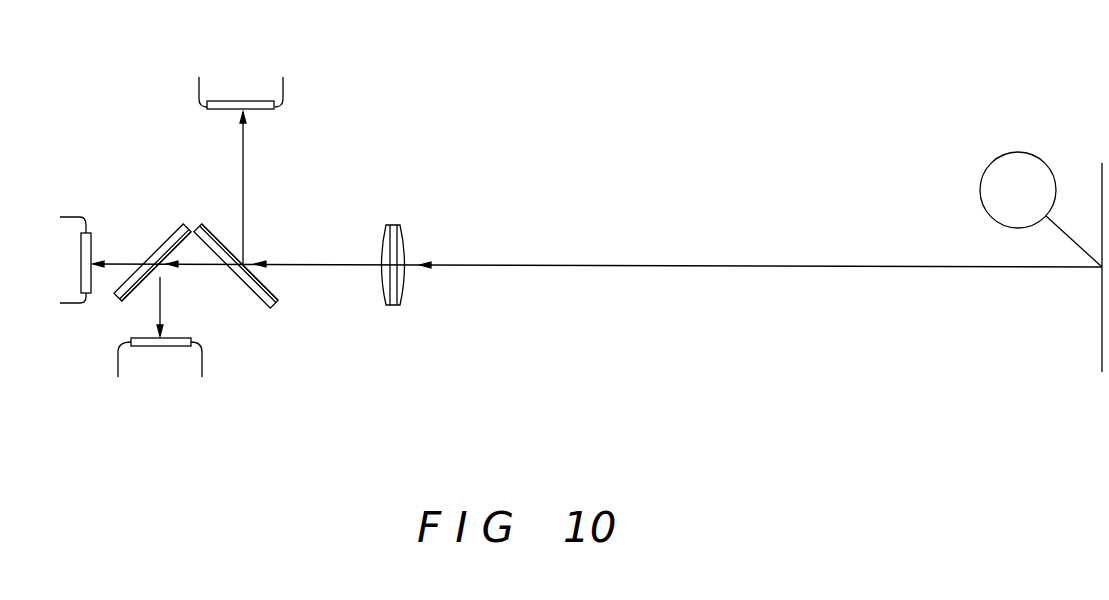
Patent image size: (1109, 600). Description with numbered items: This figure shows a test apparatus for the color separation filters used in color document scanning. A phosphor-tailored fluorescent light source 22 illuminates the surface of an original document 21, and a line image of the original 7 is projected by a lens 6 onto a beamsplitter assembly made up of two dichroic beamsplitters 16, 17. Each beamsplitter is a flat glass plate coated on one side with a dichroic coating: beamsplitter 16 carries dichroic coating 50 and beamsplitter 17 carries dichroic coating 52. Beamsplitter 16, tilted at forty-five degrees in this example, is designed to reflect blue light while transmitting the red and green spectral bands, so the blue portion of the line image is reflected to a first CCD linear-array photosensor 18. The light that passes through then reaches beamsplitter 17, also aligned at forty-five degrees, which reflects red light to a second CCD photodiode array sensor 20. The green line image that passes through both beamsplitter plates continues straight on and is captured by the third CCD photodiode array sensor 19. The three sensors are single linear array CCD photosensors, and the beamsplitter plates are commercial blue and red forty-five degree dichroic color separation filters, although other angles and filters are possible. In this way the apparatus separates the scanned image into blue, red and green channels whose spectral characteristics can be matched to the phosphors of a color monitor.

The lens 6 is at (407, 237).
The line image of the original 7 is at (1097, 272).
The dichroic beamsplitter 16 is at (280, 287).
The dichroic beamsplitter 17 is at (168, 225).
The first CCD linear-array photosensor 18 is at (248, 101).
The third CCD photodiode array sensor 19 is at (81, 250).
The second CCD photodiode array sensor 20 is at (170, 347).
The original document 21 is at (1102, 353).
The fluorescent light source 22 is at (988, 163).
The dichroic coating 50 is at (222, 240).
The dichroic coating 52 is at (130, 297).